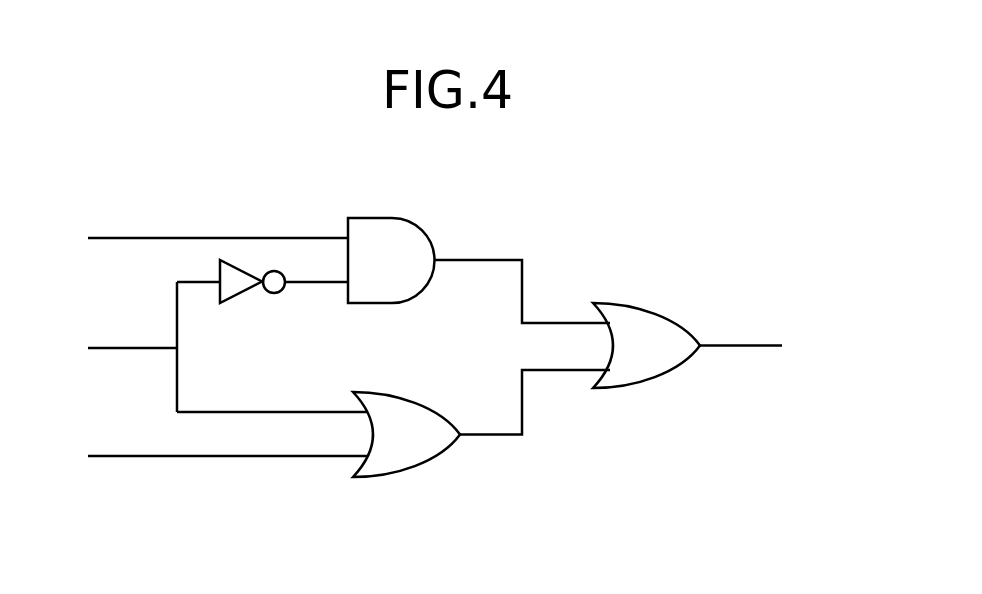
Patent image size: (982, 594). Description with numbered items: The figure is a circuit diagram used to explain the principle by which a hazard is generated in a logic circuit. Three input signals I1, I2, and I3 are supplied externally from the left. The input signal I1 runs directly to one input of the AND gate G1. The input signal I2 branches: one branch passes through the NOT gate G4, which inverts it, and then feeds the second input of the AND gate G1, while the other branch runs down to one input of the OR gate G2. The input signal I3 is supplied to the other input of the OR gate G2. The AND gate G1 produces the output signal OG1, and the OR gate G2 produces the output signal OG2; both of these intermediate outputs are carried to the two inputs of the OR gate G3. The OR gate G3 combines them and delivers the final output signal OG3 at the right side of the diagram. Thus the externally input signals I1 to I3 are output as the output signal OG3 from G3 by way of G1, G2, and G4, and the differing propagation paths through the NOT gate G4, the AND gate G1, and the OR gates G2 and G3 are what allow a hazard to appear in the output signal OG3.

The input signal I1 is at (201, 238).
The input signal I2 is at (211, 347).
The input signal I3 is at (211, 456).
The AND gate G1 is at (391, 238).
The OR gate G2 is at (406, 455).
The OR gate G3 is at (646, 326).
The NOT gate G4 is at (284, 299).
The output signal OG1 is at (523, 275).
The output signal OG2 is at (535, 419).
The output signal OG3 is at (775, 343).